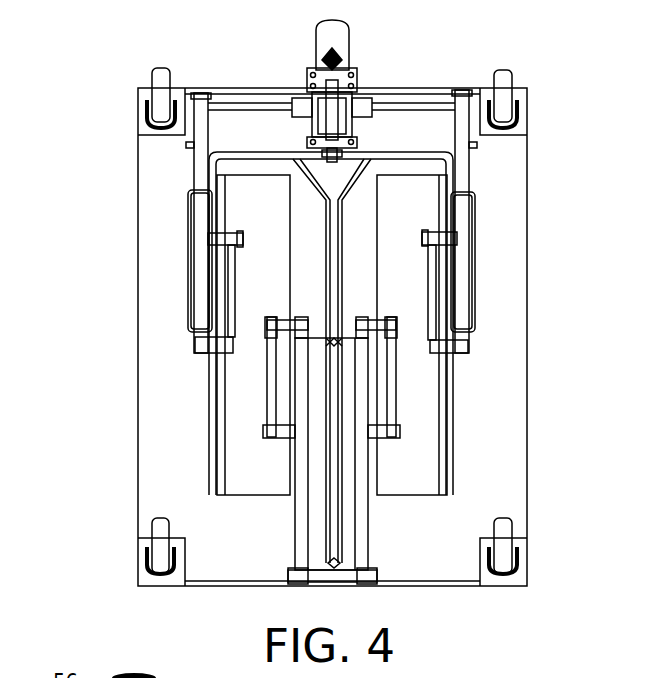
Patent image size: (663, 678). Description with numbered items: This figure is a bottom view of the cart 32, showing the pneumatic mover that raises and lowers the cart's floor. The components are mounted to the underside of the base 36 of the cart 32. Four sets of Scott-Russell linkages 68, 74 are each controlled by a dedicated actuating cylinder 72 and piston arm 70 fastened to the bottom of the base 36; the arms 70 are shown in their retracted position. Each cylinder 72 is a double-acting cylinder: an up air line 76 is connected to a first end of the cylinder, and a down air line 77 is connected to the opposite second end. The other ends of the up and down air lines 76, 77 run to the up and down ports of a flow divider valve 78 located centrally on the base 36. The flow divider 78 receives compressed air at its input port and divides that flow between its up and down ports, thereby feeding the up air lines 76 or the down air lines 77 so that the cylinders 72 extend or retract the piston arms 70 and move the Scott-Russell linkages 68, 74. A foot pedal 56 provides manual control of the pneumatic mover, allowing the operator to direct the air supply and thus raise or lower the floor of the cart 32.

The cart 32 is at (92, 72).
The base 36 is at (508, 495).
The foot pedal 56 is at (338, 33).
The Scott-Russell linkage 68 is at (392, 360).
The piston arm 70 is at (198, 335).
The actuating cylinder 72 is at (202, 181).
The Scott-Russell linkage 74 is at (385, 403).
The up air line 76 is at (262, 158).
The down air line 77 is at (225, 103).
The flow divider valve 78 is at (358, 100).